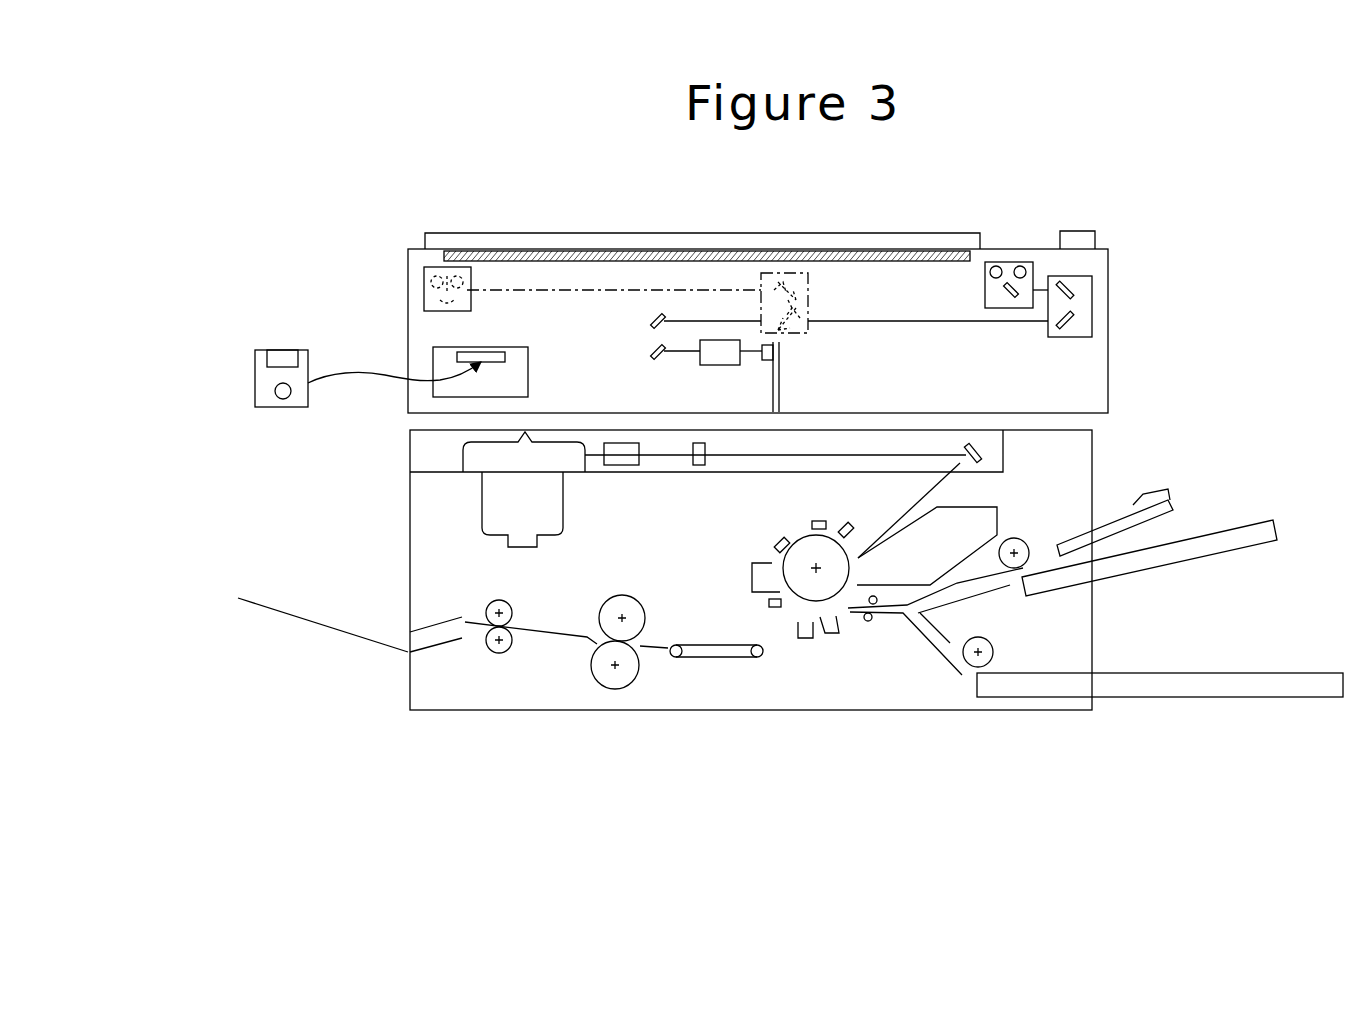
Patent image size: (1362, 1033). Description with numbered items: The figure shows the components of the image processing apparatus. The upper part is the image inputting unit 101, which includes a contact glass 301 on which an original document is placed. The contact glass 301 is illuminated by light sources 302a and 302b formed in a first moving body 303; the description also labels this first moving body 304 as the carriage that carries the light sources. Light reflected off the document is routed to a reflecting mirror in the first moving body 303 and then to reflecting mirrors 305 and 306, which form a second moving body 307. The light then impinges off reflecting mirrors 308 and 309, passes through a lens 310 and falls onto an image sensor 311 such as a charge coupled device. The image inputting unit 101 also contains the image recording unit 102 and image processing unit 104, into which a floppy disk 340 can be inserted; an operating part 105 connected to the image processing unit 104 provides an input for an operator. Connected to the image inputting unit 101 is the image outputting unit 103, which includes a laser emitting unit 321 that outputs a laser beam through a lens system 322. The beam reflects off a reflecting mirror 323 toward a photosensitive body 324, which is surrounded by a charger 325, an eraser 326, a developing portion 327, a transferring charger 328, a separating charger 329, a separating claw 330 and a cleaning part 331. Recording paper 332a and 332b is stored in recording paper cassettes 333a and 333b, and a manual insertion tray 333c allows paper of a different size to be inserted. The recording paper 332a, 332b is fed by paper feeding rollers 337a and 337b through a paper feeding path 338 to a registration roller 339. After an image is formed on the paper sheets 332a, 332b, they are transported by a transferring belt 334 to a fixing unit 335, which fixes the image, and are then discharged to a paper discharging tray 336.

The image inputting unit 101 is at (406, 289).
The image recording unit 102 is at (501, 347).
The image processing unit 104 is at (508, 347).
The image outputting unit 103 is at (403, 553).
The operating part 105 is at (1095, 238).
The contact glass 301 is at (833, 250).
The light source 302a is at (996, 265).
The light source 302b is at (1024, 262).
The first moving body 303 is at (1004, 302).
The first scanning carriage 304 is at (985, 288).
The reflecting mirror 305 is at (1075, 285).
The reflecting mirror 306 is at (1070, 337).
The second moving body 307 is at (1087, 308).
The reflecting mirror 308 is at (650, 319).
The reflecting mirror 309 is at (651, 357).
The lens 310 is at (707, 370).
The image sensor 311 is at (760, 367).
The laser emitting unit 321 is at (483, 535).
The lens system 322 is at (616, 467).
The reflecting mirror 323 is at (983, 448).
The photosensitive body 324 is at (800, 535).
The charger 325 is at (819, 520).
The eraser 326 is at (853, 524).
The developing portion 327 is at (973, 510).
The transferring charger 328 is at (831, 633).
The separating charger 329 is at (805, 638).
The separating claw 330 is at (769, 603).
The cleaning part 331 is at (752, 565).
The recording paper 332a is at (1228, 532).
The recording paper 332b is at (1107, 693).
The recording paper cassette 333a is at (1279, 531).
The recording paper cassette 333b is at (1233, 672).
The manual insertion tray 333c is at (1172, 490).
The transferring belt 334 is at (722, 660).
The fixing unit 335 is at (623, 608).
The paper discharging tray 336 is at (318, 622).
The paper feeding roller 337a is at (1035, 530).
The paper feeding roller 337b is at (987, 637).
The paper feeding path 338 is at (940, 652).
The registration roller 339 is at (636, 232).
The floppy disk 340 is at (283, 407).